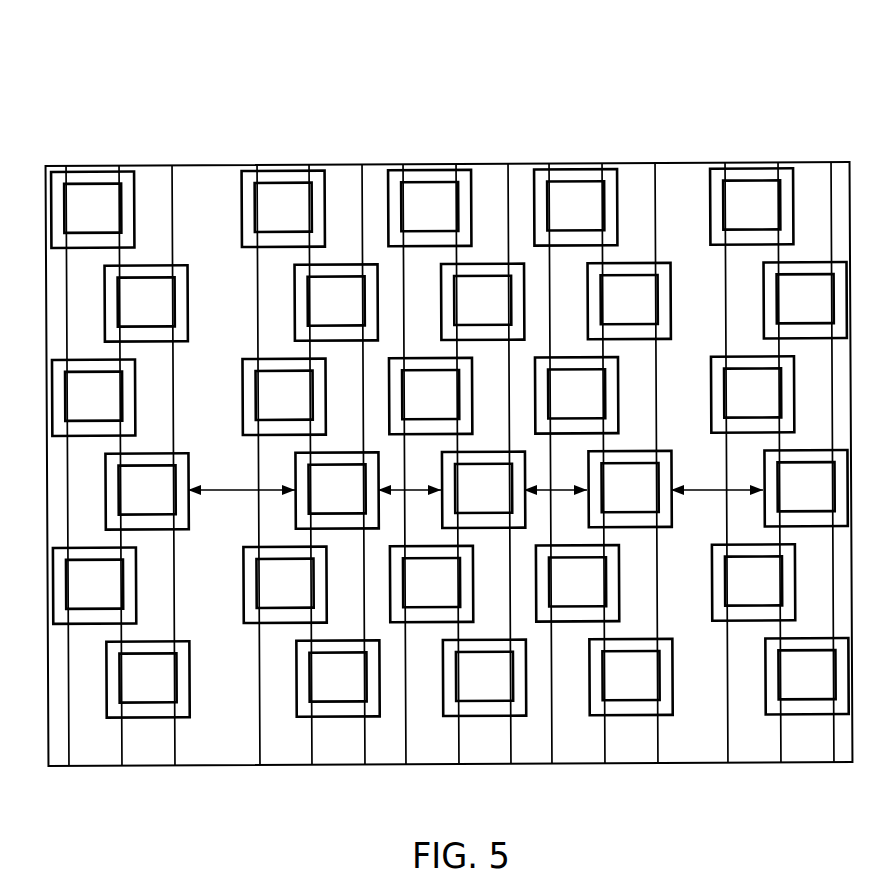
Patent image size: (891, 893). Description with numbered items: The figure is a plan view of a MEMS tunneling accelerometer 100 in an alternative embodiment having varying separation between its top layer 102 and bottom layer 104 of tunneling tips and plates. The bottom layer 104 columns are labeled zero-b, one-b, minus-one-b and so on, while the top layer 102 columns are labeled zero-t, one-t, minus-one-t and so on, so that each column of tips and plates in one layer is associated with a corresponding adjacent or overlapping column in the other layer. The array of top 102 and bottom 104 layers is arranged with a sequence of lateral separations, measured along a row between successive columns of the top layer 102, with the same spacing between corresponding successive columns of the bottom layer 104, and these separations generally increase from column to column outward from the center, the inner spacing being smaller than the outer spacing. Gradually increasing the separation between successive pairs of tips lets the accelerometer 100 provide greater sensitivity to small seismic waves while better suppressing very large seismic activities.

The MEMS tunneling accelerometer 100 is at (756, 93).
The top layer of tunneling tips and plates 102 is at (160, 175).
The bottom layer of tunneling tips and plates 104 is at (89, 168).